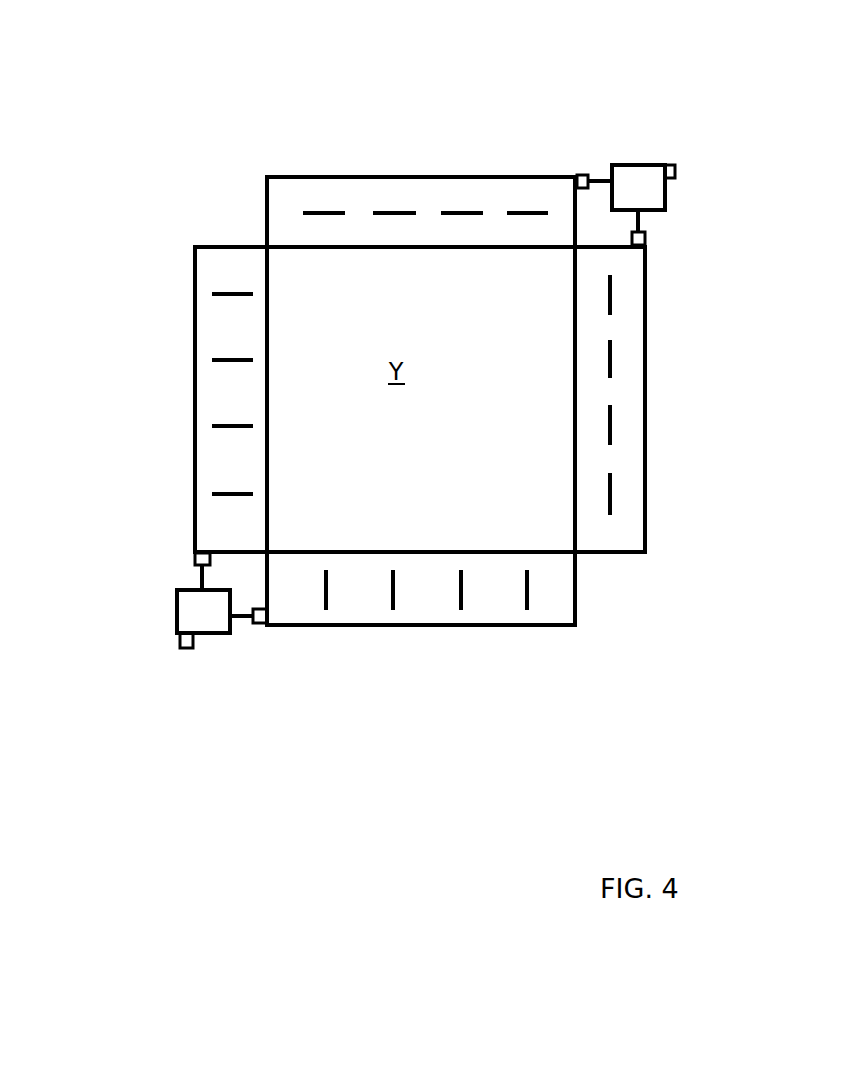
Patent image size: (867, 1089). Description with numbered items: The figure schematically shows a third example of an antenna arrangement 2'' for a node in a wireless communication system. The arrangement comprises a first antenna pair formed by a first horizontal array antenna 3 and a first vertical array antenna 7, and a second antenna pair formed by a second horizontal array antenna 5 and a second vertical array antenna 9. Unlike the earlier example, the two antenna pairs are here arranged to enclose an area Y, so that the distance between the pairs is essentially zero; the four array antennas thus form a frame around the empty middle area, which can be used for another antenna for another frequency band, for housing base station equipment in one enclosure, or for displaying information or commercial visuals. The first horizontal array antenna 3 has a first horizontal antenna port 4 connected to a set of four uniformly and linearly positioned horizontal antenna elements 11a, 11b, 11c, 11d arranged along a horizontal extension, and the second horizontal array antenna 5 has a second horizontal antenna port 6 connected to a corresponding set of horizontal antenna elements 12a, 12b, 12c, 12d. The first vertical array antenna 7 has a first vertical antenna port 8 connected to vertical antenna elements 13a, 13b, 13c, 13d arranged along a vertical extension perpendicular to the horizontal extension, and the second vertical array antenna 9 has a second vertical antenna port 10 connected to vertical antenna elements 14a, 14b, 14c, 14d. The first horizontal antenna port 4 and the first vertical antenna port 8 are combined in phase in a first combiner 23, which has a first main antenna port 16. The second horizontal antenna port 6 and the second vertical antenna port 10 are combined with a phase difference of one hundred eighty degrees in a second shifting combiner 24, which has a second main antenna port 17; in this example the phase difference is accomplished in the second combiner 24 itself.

The antenna arrangement 2'' is at (109, 52).
The first horizontal array antenna 3 is at (558, 572).
The first horizontal antenna port 4 is at (255, 620).
The second horizontal array antenna 5 is at (300, 195).
The second horizontal antenna port 6 is at (580, 176).
The first vertical array antenna 7 is at (237, 262).
The first vertical antenna port 8 is at (195, 557).
The second vertical array antenna 9 is at (633, 545).
The second vertical antenna port 10 is at (646, 238).
The first antenna element 11a is at (326, 598).
The second antenna element 11b is at (393, 598).
The third antenna element 11c is at (461, 598).
The fourth antenna element 11d is at (527, 588).
The first antenna element 12a is at (523, 213).
The second antenna element 12b is at (472, 213).
The third antenna element 12c is at (402, 213).
The fourth antenna element 12d is at (322, 213).
The first antenna element 13a is at (233, 494).
The second antenna element 13b is at (228, 426).
The third antenna element 13c is at (230, 360).
The fourth antenna element 13d is at (235, 294).
The first antenna element 14a is at (610, 290).
The second antenna element 14b is at (610, 359).
The third antenna element 14c is at (610, 423).
The fourth antenna element 14d is at (610, 495).
The first main antenna port 16 is at (183, 650).
The second main antenna port 17 is at (672, 165).
The first combiner 23 is at (192, 612).
The second shifting combiner 24 is at (637, 185).